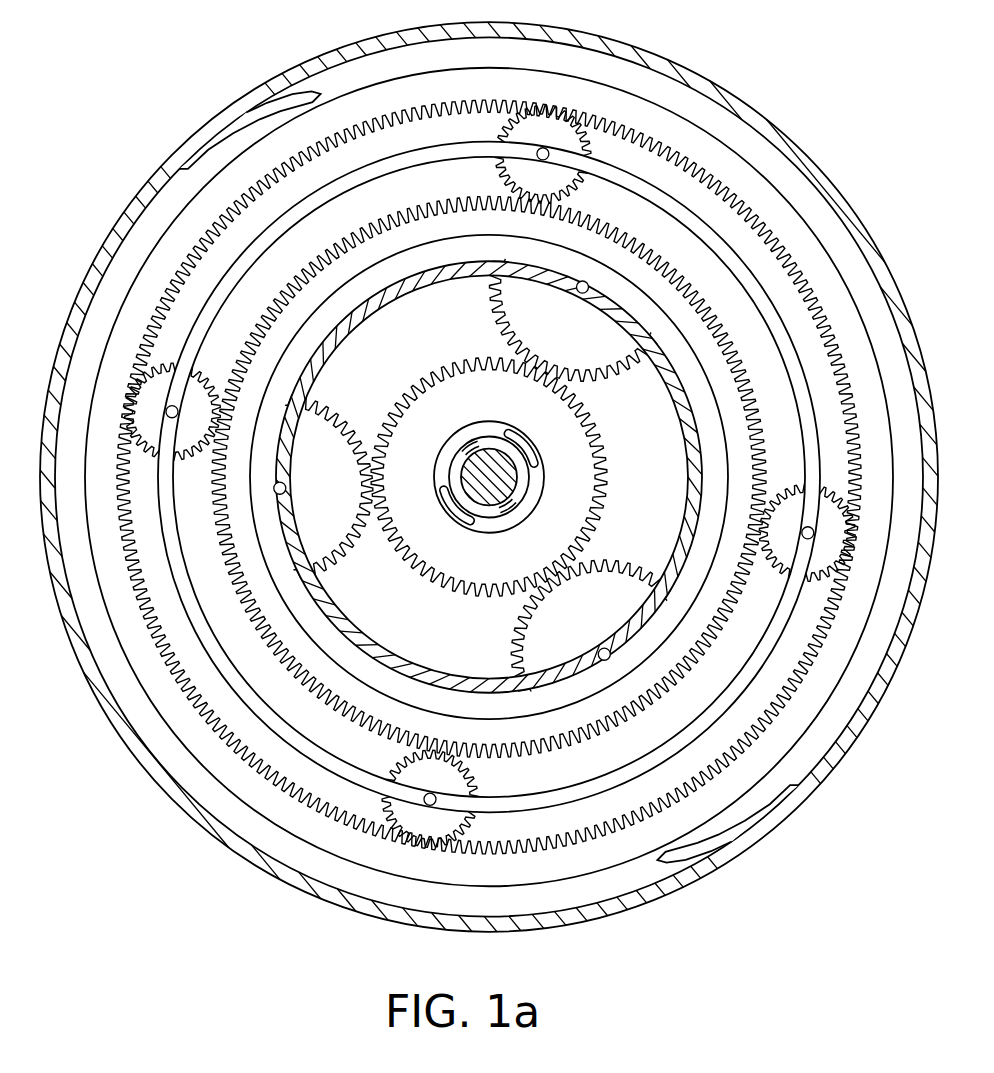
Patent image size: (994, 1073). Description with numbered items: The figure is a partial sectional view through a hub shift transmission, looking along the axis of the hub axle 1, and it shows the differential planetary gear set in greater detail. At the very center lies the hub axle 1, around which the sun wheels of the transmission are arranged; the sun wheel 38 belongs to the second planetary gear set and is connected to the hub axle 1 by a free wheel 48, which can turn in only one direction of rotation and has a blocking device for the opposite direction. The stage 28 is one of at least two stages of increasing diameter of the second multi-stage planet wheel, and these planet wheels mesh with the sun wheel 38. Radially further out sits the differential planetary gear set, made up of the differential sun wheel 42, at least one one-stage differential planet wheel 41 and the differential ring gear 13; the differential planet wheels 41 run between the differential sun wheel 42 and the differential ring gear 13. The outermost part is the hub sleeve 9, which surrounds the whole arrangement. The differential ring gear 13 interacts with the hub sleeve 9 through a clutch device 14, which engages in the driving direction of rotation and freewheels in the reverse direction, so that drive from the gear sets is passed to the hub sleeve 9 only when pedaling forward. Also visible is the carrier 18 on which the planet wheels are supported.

The hub axle 1 is at (500, 473).
The hub sleeve 9 is at (624, 48).
The differential ring gear 13 is at (743, 176).
The clutch device 14 is at (726, 828).
The planet carrier 18 is at (700, 400).
The stage of the second multi-stage planet wheel 28 is at (527, 316).
The sun wheel 38 is at (527, 391).
The differential planet wheel 41 is at (550, 134).
The differential sun wheel 42 is at (661, 286).
The free wheel 48 is at (518, 457).